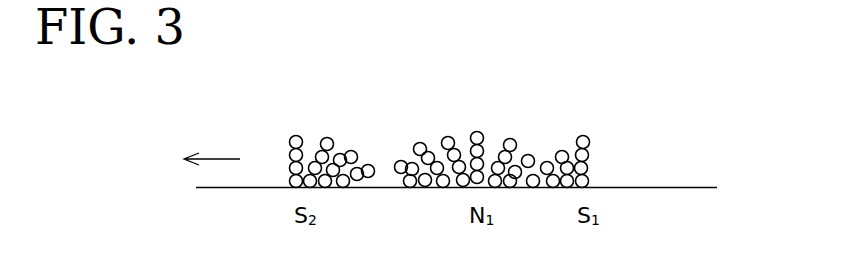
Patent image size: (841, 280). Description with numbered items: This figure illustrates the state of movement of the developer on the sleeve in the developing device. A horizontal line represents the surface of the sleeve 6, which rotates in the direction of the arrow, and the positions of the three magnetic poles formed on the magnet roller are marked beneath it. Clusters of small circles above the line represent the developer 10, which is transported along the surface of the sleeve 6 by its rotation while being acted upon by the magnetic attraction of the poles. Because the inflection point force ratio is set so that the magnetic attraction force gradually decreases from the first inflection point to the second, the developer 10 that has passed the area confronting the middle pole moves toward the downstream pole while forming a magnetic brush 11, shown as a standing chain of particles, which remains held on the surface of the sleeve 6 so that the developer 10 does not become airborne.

The sleeve 6 is at (705, 187).
The developer 10 is at (598, 139).
The magnetic brush 11 is at (478, 131).